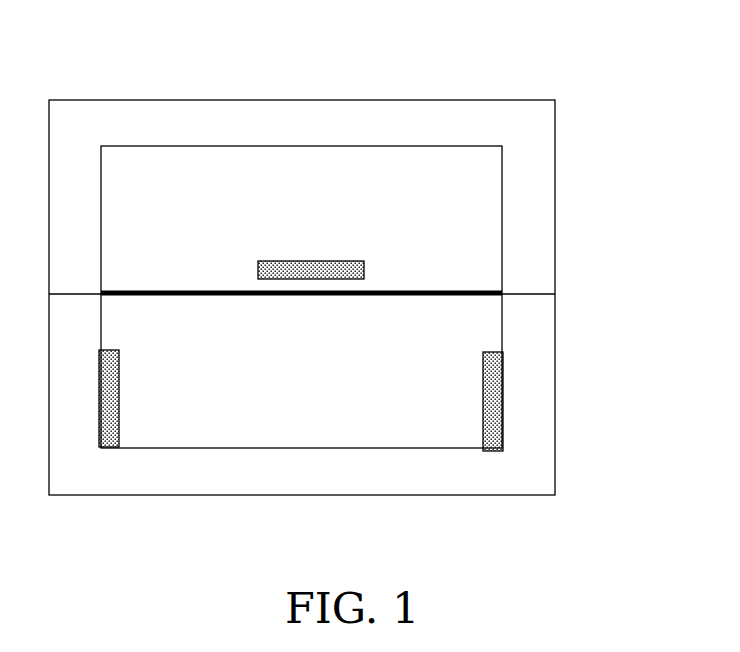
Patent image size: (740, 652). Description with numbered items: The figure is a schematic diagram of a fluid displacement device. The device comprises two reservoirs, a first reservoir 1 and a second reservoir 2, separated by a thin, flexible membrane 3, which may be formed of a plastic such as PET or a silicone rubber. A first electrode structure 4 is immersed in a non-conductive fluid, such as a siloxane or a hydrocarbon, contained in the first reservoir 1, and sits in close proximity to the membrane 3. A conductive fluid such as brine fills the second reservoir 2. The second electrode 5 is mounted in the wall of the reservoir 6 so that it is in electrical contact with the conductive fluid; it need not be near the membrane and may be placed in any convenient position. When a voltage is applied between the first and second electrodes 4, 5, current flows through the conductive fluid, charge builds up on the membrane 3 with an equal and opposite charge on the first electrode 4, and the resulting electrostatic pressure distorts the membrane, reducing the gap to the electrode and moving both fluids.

The first reservoir 1 is at (485, 221).
The second reservoir 2 is at (418, 352).
The membrane 3 is at (397, 292).
The first electrode structure 4 is at (333, 255).
The second electrode 5 is at (488, 392).
The reservoir wall 6 is at (537, 426).